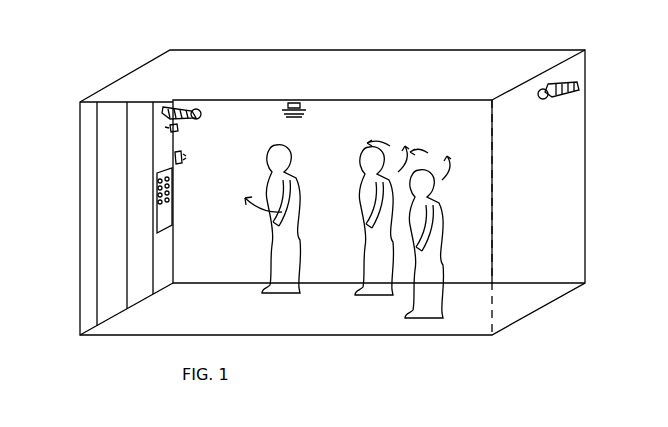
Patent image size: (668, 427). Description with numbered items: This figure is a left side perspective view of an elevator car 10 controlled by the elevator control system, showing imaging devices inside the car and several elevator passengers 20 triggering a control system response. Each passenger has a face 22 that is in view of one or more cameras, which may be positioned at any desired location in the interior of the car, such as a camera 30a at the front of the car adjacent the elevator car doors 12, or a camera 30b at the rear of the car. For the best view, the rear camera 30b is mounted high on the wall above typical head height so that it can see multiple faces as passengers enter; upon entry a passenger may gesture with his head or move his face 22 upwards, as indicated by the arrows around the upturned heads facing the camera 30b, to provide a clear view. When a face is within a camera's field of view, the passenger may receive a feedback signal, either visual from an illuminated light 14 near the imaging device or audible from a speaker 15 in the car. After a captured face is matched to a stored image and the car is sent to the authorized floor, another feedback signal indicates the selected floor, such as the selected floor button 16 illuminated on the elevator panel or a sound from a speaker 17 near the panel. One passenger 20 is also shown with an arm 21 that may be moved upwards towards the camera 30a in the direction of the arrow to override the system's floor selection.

The elevator car 10 is at (596, 170).
The elevator car doors 12 is at (112, 252).
The illuminated light 14 is at (176, 128).
The speaker 15 is at (305, 108).
The selected floor button 16 is at (168, 200).
The speaker 17 is at (175, 157).
The elevator passengers 20 is at (291, 262).
The arm 21 is at (291, 195).
The face 22 is at (272, 158).
The camera 30a is at (172, 110).
The camera 30b is at (561, 85).